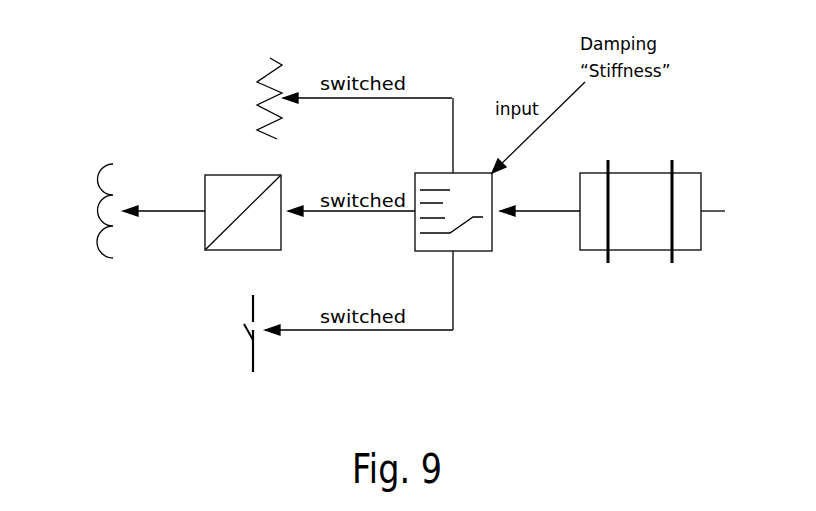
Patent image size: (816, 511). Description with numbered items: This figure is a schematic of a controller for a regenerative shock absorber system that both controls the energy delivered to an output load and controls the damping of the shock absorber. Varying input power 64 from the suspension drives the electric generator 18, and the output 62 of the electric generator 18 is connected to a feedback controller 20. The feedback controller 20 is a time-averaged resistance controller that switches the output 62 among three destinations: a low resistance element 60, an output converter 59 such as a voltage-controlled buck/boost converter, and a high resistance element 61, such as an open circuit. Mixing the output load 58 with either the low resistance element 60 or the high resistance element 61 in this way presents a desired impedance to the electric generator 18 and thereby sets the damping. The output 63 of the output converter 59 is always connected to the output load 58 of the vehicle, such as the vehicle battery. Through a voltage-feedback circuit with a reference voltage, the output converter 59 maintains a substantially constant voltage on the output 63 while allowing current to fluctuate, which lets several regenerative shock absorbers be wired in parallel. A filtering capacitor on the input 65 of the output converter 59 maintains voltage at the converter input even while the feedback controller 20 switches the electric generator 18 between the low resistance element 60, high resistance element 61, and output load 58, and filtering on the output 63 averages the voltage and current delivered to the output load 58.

The electric generator 18 is at (628, 243).
The feedback controller 20 is at (492, 235).
The output load 58 is at (97, 211).
The output converter 59 is at (264, 252).
The low resistance element 60 is at (258, 95).
The high resistance element 61 is at (243, 335).
The output of the electric generator 62 is at (550, 211).
The output of the output converter 63 is at (185, 210).
The input power 64 is at (711, 211).
The input of the converter 65 is at (410, 190).